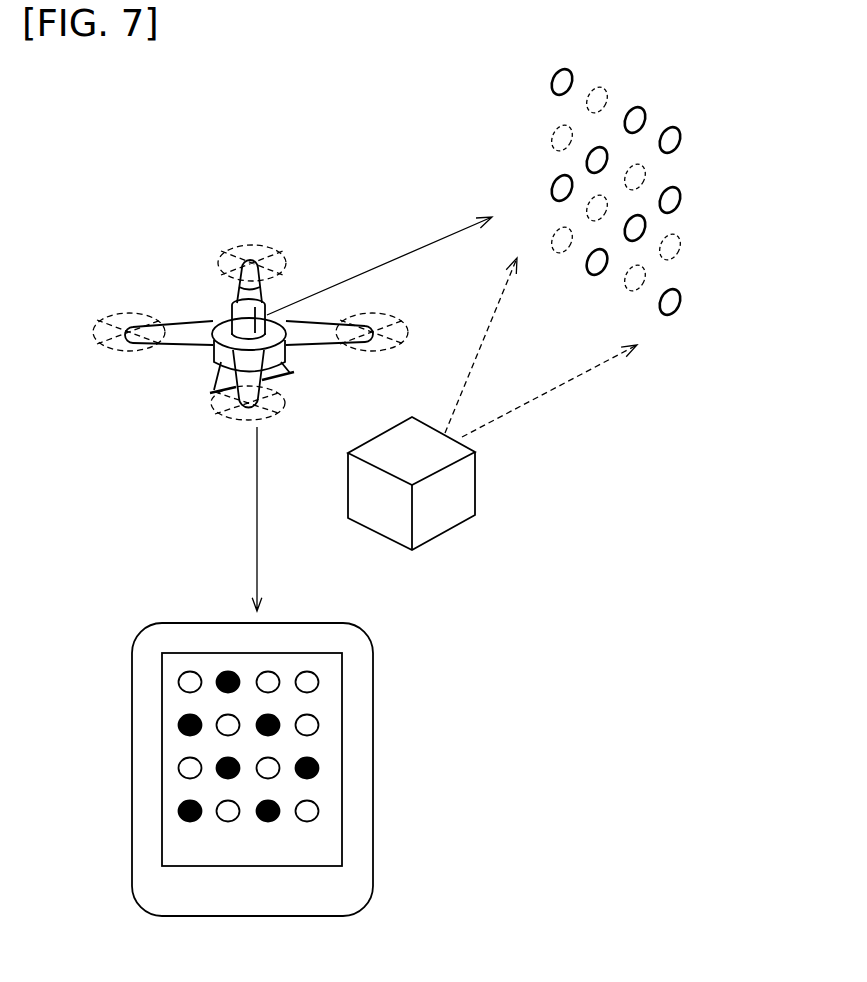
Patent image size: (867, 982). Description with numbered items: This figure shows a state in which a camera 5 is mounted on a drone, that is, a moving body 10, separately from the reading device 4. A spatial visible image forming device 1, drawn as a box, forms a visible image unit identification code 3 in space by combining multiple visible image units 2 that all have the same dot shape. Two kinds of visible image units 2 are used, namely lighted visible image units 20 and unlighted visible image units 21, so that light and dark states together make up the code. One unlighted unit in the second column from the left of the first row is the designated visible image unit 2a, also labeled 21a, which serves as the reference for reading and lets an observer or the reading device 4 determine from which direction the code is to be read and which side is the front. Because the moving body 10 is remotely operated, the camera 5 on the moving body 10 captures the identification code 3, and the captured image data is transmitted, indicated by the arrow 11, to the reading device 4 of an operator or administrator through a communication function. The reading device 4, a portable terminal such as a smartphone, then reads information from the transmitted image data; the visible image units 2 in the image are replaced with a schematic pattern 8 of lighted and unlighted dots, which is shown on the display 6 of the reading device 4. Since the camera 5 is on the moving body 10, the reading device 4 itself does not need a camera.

The spatial visible image forming device 1 is at (435, 525).
The visible image unit 2 is at (618, 200).
The designated visible image unit 2a is at (646, 86).
The visible image unit identification code 3 is at (625, 195).
The reading device 4 is at (277, 750).
The camera 5 is at (259, 311).
The display 6 is at (323, 843).
The schematic pattern 8 is at (327, 695).
The moving body 10 is at (250, 331).
The data transmission 11 is at (257, 510).
The lighted visible image unit 20 is at (554, 94).
The unlighted visible image unit 21 is at (678, 253).
The designated unlighted visible image unit 21a is at (620, 84).